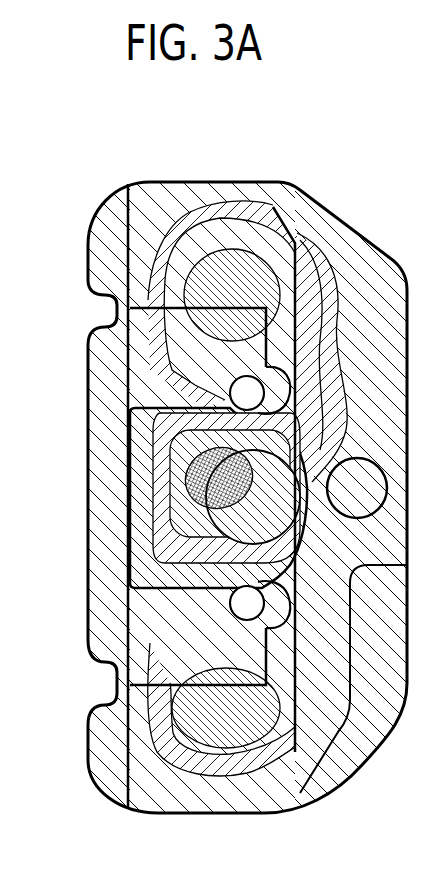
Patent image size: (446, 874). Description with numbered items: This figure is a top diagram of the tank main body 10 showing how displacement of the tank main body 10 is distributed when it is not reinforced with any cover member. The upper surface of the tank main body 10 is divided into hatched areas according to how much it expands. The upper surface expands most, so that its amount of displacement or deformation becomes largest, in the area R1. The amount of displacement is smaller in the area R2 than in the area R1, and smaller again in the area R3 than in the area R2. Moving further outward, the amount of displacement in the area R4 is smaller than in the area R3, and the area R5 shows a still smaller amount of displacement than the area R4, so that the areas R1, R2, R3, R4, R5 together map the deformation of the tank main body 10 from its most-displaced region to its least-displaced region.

The tank main body 10 is at (214, 181).
The area R1 is at (187, 467).
The area R2 is at (217, 282).
The area R3 is at (157, 512).
The area R4 is at (147, 563).
The area R5 is at (103, 633).